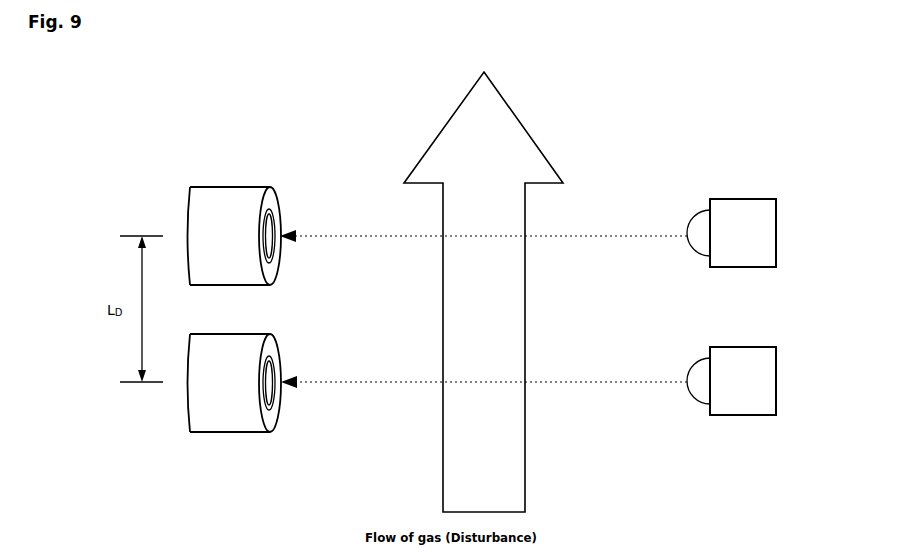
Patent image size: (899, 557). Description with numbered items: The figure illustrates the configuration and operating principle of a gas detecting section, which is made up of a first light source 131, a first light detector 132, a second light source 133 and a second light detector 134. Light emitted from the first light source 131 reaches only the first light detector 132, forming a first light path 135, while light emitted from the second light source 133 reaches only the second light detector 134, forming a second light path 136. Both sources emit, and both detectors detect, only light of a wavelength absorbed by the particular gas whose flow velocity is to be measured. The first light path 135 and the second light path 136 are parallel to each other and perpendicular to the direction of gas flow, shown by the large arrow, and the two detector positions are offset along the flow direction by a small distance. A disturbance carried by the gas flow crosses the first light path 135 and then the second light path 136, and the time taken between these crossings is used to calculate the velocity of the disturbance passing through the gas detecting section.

The first light source 131 is at (734, 422).
The first light detector 132 is at (236, 425).
The second light source 133 is at (735, 191).
The second light detector 134 is at (240, 200).
The first light path 135 is at (484, 420).
The second light path 136 is at (484, 195).